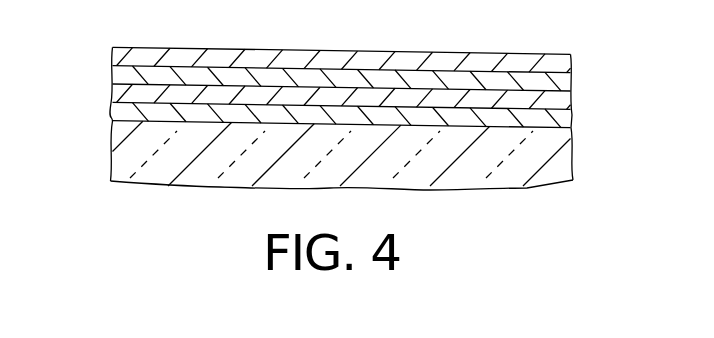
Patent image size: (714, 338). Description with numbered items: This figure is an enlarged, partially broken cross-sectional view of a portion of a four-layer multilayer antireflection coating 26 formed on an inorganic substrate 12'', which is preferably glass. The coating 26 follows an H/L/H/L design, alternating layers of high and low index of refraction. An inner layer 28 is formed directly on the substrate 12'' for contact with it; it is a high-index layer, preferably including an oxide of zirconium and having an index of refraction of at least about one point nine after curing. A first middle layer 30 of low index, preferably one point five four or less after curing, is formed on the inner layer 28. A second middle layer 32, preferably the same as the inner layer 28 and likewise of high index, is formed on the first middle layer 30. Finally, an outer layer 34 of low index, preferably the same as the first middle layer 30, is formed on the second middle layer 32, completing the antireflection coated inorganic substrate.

The inorganic substrate 12'' is at (342, 176).
The multilayer antireflection coating 26 is at (582, 53).
The inner layer 28 is at (122, 112).
The first middle layer 30 is at (116, 90).
The second middle layer 32 is at (140, 72).
The outer layer 34 is at (257, 55).